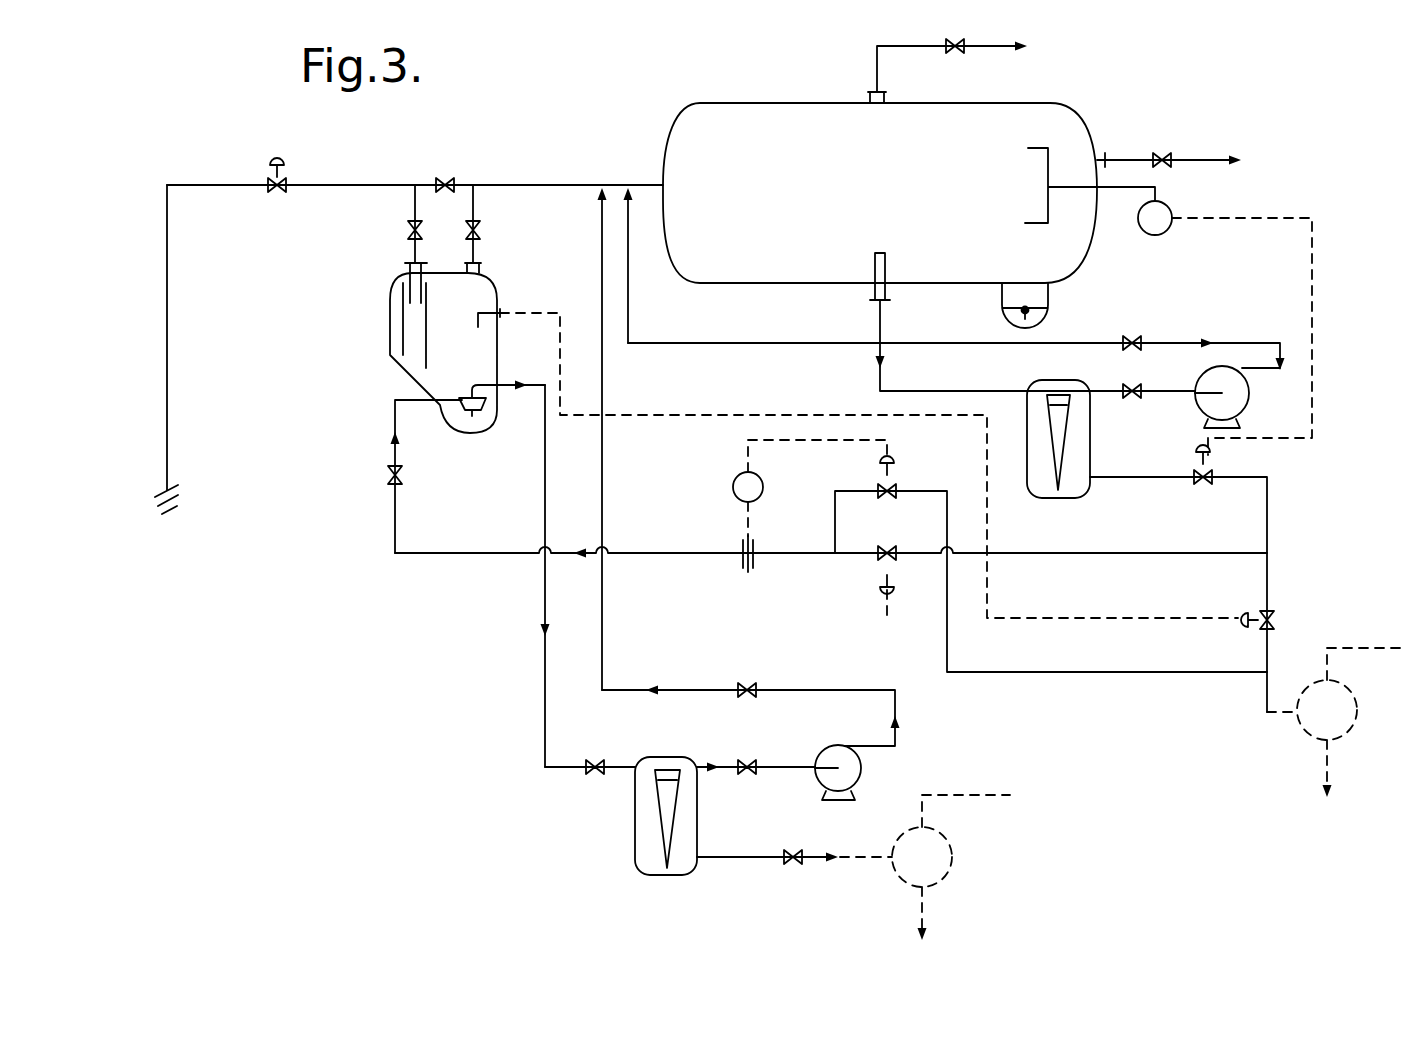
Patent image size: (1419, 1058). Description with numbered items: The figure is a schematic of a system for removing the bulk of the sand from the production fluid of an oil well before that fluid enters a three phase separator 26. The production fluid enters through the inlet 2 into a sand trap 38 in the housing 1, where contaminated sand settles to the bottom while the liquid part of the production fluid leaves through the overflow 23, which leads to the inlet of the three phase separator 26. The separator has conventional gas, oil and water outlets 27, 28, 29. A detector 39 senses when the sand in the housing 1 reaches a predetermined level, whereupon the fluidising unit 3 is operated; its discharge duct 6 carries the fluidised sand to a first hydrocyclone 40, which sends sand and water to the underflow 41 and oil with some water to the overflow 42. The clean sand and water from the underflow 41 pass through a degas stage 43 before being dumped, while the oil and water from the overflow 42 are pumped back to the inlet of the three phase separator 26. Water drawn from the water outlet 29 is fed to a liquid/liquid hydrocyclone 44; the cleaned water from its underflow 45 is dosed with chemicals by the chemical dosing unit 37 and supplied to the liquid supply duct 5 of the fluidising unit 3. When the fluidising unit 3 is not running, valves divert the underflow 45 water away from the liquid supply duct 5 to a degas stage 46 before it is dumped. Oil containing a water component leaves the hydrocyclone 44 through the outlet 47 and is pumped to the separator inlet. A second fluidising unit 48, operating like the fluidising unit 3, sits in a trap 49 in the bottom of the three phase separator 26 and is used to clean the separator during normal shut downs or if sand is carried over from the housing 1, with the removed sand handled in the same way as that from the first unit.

The housing 1 is at (492, 283).
The inlet 2 is at (413, 207).
The fluidising unit 3 is at (487, 402).
The liquid supply duct 5 is at (393, 412).
The discharge duct 6 is at (543, 472).
The overflow 23 is at (525, 185).
The three phase separator 26 is at (808, 104).
The gas outlet 27 is at (1006, 50).
The oil outlet 28 is at (1205, 158).
The water outlet 29 is at (875, 316).
The chemical dosing unit 37 is at (440, 553).
The sand trap 38 is at (400, 322).
The detector 39 is at (500, 313).
The first hydrocyclone 40 is at (657, 812).
The underflow 41 is at (737, 860).
The overflow 42 is at (700, 765).
The degas stage 43 is at (952, 845).
The liquid/liquid hydrocyclone 44 is at (1065, 450).
The underflow 45 is at (1140, 478).
The degas stage 46 is at (1302, 730).
The outlet 47 is at (1165, 391).
The second fluidising unit 48 is at (1000, 316).
The trap 49 is at (1048, 300).